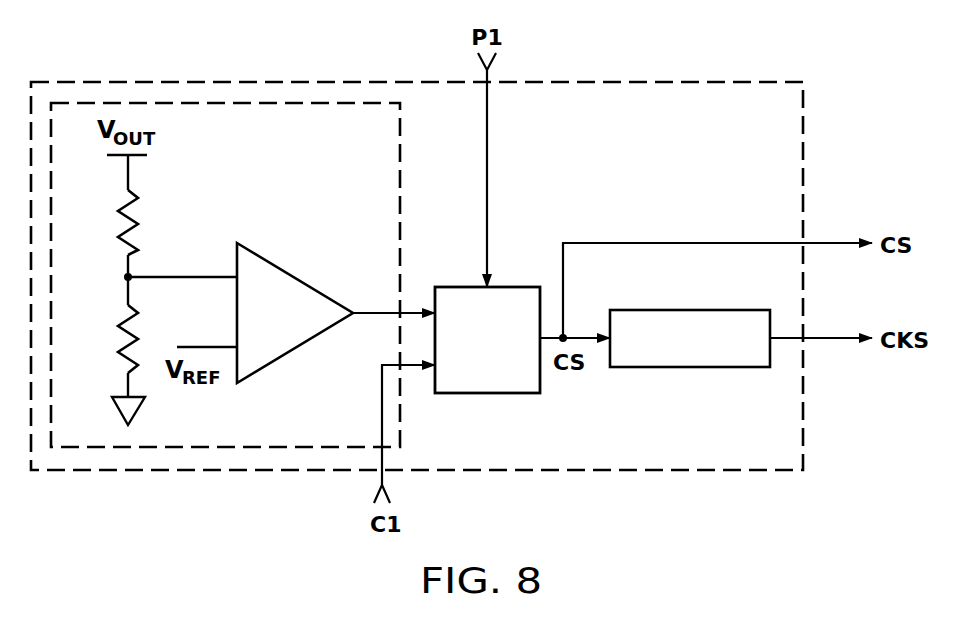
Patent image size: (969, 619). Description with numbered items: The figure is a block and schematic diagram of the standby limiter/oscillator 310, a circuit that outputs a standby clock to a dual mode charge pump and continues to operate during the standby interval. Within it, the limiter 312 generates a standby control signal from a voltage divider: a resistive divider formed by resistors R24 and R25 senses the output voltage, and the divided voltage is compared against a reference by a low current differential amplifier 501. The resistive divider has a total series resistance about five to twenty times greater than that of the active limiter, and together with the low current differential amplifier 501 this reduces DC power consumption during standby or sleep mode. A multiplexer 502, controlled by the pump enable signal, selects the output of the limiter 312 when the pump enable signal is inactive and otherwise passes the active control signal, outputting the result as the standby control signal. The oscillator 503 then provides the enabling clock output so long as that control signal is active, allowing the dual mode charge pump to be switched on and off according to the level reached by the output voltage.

The standby limiter/oscillator 310 is at (620, 82).
The limiter 312 is at (294, 165).
The low current differential amplifier 501 is at (252, 324).
The multiplexer 502 is at (461, 327).
The oscillator 503 is at (677, 310).
The resistor R24 is at (102, 215).
The resistor R25 is at (102, 336).